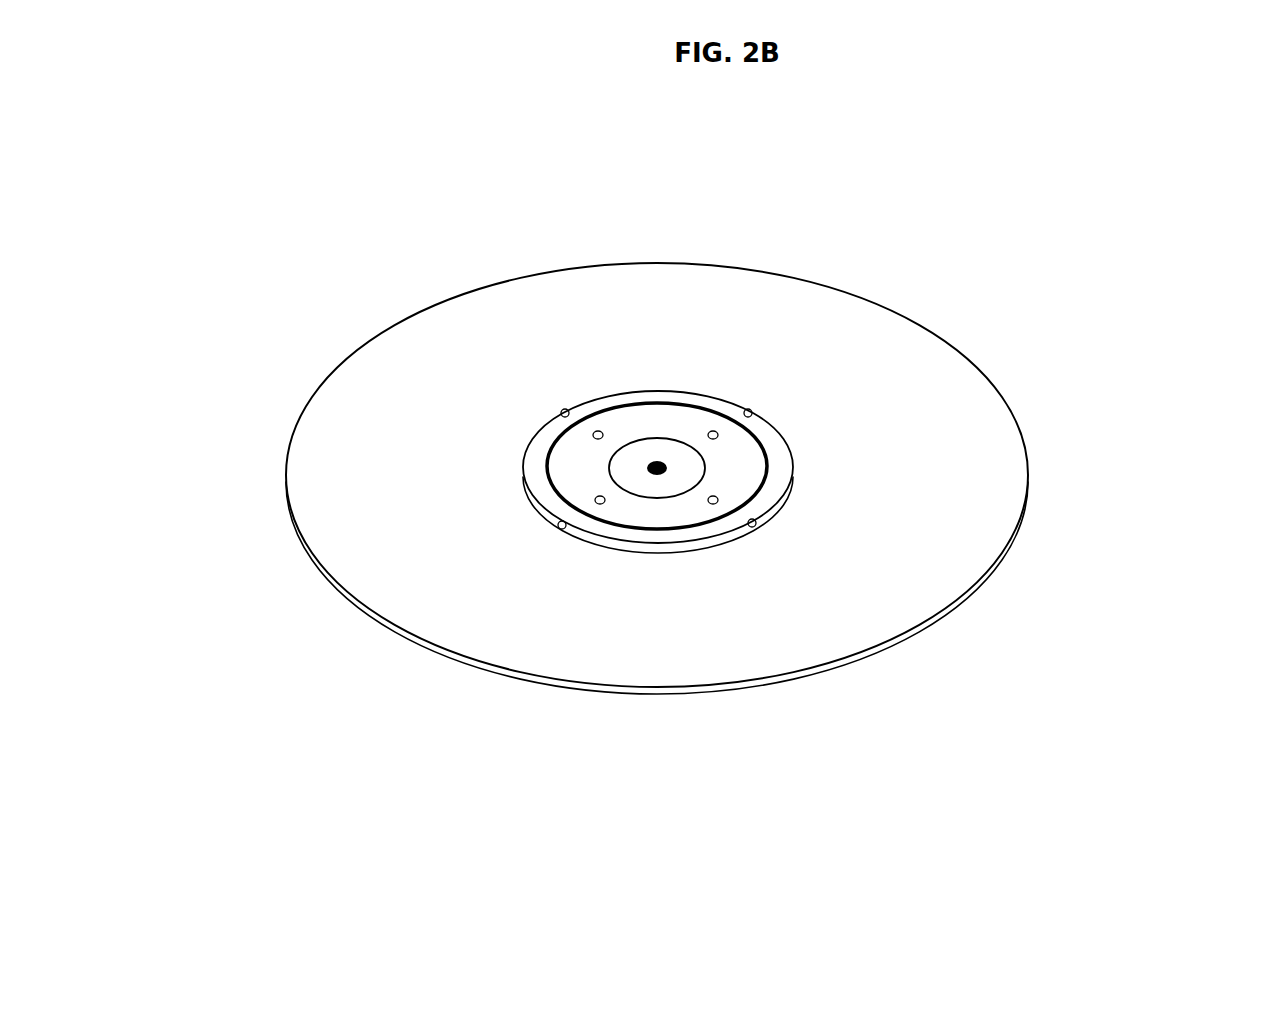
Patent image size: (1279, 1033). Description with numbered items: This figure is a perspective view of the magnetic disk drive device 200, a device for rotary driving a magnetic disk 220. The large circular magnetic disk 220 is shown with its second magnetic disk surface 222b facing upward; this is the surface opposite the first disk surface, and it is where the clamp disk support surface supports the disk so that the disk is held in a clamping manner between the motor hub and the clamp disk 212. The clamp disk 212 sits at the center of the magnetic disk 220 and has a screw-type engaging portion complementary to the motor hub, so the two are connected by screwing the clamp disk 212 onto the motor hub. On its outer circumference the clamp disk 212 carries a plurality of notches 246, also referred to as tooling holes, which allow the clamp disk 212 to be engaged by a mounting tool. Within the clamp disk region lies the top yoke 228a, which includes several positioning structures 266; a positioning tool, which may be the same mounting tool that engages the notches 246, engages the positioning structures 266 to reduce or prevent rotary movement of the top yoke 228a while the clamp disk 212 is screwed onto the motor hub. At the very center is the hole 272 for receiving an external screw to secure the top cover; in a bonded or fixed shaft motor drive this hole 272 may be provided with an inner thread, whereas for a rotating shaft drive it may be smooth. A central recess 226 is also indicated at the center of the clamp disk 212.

The magnetic disk drive device 200 is at (1258, 154).
The clamp disk 212 is at (775, 445).
The magnetic disk 220 is at (1005, 570).
The second magnetic disk surface 222b is at (878, 600).
The central recess 226 is at (628, 460).
The top yoke 228a is at (653, 505).
The notches 246 is at (562, 410).
The positioning structures 266 is at (598, 431).
The hole 272 is at (668, 467).